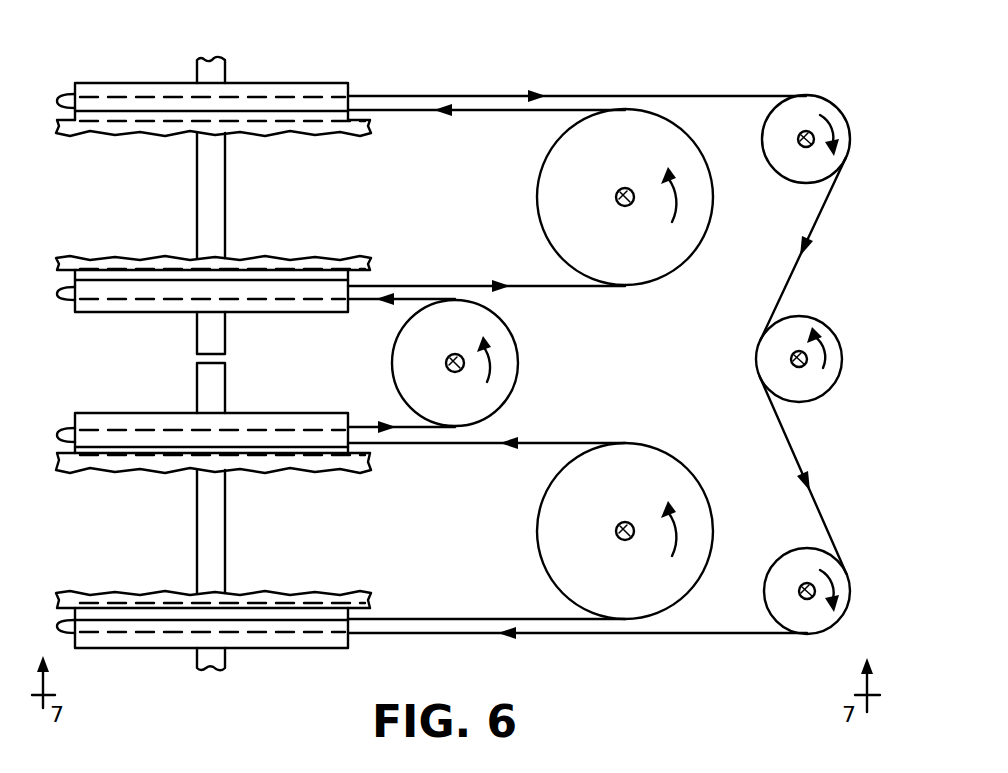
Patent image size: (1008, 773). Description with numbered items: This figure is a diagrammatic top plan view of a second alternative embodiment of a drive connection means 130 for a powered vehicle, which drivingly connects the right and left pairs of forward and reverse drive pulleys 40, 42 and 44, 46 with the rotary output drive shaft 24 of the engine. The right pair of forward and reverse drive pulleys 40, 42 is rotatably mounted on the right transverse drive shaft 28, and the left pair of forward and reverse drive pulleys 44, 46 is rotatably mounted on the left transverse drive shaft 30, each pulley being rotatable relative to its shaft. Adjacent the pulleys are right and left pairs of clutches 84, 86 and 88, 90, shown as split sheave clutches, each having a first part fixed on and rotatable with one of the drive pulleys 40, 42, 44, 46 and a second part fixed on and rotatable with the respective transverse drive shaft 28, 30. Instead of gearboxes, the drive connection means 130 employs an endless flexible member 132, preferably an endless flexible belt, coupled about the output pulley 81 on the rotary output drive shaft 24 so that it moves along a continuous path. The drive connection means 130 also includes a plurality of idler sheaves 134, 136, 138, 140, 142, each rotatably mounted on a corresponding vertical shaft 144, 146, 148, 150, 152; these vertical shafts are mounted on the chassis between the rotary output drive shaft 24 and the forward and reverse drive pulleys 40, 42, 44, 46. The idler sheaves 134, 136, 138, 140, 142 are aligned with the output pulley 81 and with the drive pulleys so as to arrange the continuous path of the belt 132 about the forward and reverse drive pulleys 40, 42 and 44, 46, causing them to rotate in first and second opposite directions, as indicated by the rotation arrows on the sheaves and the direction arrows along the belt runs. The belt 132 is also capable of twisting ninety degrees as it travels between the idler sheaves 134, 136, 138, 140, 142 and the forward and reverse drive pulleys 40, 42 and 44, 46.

The drive connection means 130 is at (628, 49).
The endless flexible member 132 is at (780, 438).
The rotary output drive shaft 24 is at (797, 350).
The output pulley 81 is at (820, 393).
The right transverse drive shaft 28 is at (227, 219).
The left transverse drive shaft 30 is at (227, 546).
The forward drive pulley 40 is at (290, 83).
The reverse drive pulley 42 is at (304, 312).
The forward drive pulley 44 is at (282, 413).
The reverse drive pulley 46 is at (296, 648).
The clutch 84 is at (322, 134).
The clutch 86 is at (320, 258).
The clutch 88 is at (308, 470).
The clutch 90 is at (310, 598).
The idler sheave 134 is at (513, 363).
The idler sheave 136 is at (551, 189).
The idler sheave 138 is at (548, 541).
The idler sheave 140 is at (785, 163).
The idler sheave 142 is at (775, 571).
The vertical shaft 144 is at (455, 372).
The vertical shaft 146 is at (619, 209).
The vertical shaft 148 is at (619, 543).
The vertical shaft 150 is at (803, 131).
The vertical shaft 152 is at (803, 601).